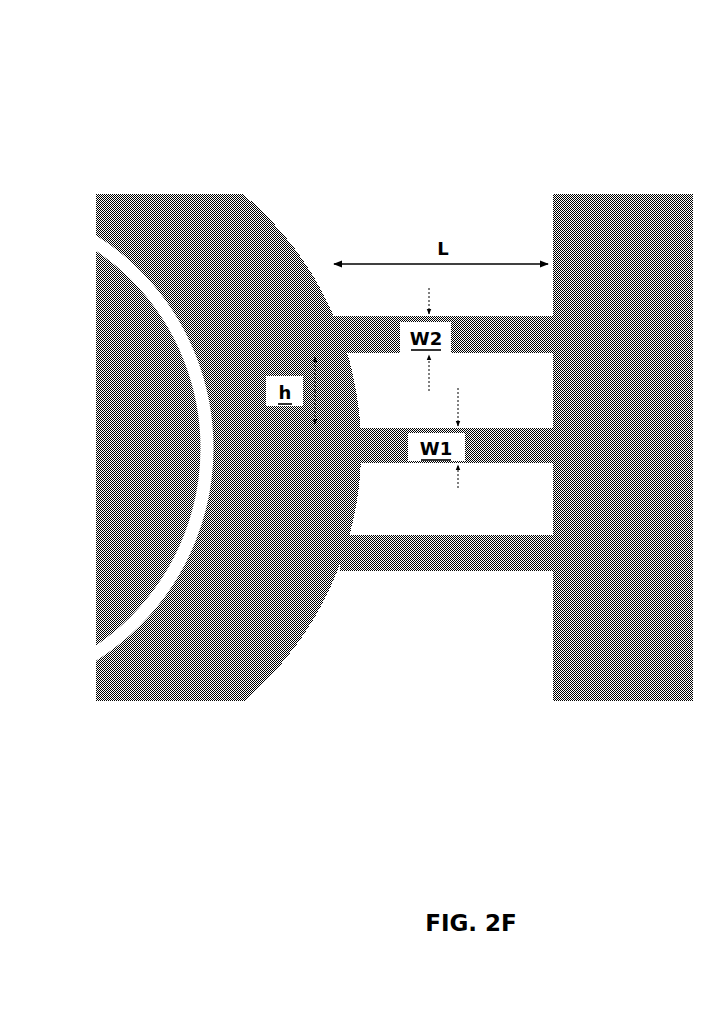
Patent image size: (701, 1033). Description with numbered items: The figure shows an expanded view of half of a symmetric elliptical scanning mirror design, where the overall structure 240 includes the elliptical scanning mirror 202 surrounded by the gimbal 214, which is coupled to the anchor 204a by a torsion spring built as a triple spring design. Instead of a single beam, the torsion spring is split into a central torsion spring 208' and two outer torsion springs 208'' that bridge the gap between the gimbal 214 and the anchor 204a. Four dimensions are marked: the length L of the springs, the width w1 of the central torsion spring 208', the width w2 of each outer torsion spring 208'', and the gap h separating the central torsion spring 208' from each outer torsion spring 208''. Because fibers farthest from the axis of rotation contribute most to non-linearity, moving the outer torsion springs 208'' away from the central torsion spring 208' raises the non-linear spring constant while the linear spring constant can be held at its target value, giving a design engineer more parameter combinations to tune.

The torsion spring structure 240 is at (140, 68).
The elliptical scanning mirror 202 is at (122, 468).
The gimbal 214 is at (271, 469).
The anchor 204a is at (608, 496).
The central torsion spring 208' is at (377, 641).
The outer torsion spring 208'' is at (454, 585).